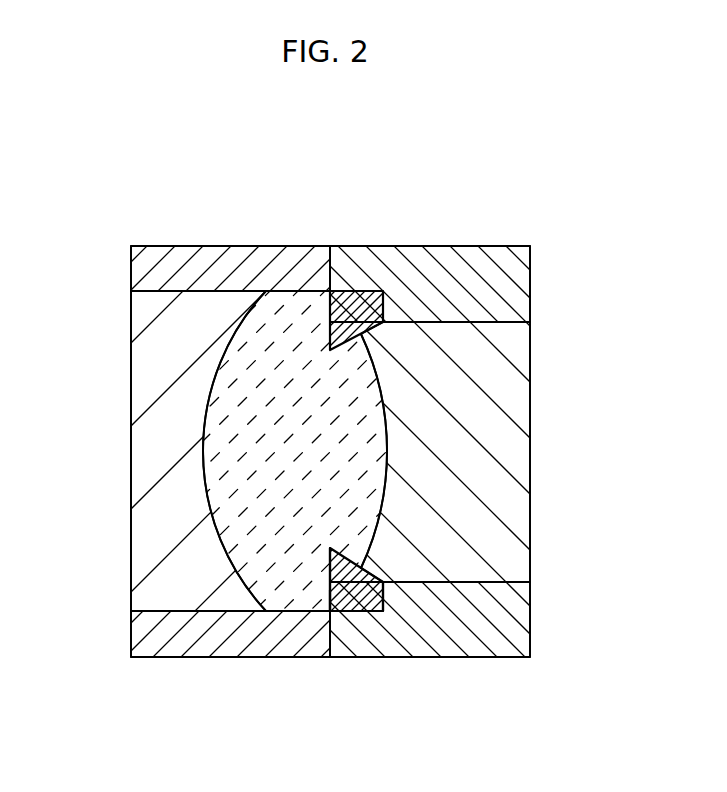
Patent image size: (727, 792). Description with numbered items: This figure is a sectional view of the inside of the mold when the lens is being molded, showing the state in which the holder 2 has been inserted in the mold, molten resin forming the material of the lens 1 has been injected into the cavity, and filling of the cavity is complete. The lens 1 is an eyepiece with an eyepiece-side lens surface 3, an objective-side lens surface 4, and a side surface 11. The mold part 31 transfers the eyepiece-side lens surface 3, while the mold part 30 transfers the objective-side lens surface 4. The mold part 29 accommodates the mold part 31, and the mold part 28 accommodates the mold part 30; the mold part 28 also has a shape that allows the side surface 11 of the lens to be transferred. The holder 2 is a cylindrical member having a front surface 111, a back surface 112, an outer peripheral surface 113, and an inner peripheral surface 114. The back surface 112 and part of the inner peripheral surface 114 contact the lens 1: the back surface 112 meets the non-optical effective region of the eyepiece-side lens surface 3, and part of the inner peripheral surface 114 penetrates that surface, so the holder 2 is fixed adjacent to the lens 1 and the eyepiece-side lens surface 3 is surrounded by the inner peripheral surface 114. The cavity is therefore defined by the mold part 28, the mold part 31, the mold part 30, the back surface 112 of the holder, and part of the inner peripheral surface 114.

The lens 1 is at (363, 396).
The holder 2 is at (355, 302).
The eyepiece-side lens surface 3 is at (383, 447).
The objective-side lens surface 4 is at (217, 373).
The side surface of the lens 11 is at (283, 290).
The mold part 28 is at (148, 278).
The mold part 29 is at (505, 292).
The mold part 30 is at (150, 482).
The mold part 31 is at (505, 514).
The front surface 111 is at (383, 595).
The back surface 112 is at (328, 589).
The outer peripheral surface 113 is at (408, 396).
The inner peripheral surface 114 is at (347, 614).